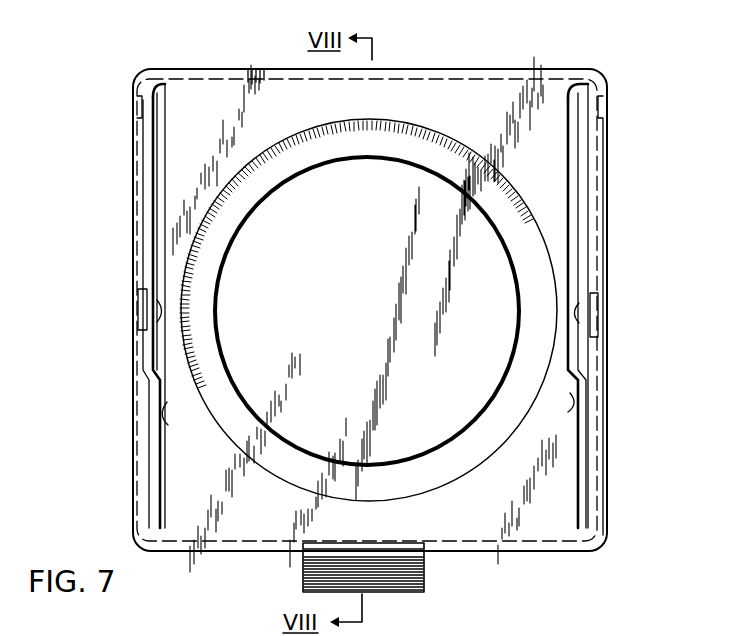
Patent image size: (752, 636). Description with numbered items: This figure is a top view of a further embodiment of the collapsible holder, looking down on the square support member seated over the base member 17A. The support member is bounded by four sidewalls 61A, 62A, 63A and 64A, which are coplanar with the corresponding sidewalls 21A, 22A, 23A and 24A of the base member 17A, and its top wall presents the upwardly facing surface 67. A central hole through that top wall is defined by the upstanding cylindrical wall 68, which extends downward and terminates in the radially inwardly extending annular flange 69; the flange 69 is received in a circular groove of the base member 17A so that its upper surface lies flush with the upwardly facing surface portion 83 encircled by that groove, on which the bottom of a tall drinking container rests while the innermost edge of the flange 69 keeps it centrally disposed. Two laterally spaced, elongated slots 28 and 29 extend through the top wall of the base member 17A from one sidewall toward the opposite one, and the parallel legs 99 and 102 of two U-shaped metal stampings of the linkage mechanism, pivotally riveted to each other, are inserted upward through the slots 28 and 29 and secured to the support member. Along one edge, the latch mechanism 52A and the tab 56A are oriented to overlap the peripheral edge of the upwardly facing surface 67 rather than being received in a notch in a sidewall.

The base member 17A is at (432, 68).
The sidewall 24A is at (503, 71).
The sidewall 64A is at (255, 70).
The upwardly facing surface 67 is at (201, 100).
The sidewall 61A is at (135, 395).
The sidewall 63A is at (607, 390).
The sidewall 21A is at (134, 452).
The sidewall 23A is at (606, 432).
The sidewall 22A is at (224, 549).
The sidewall 62A is at (516, 550).
The legs 99 is at (148, 278).
The legs 102 is at (158, 248).
The slot 29 is at (168, 425).
The slot 28 is at (568, 412).
The cylindrical wall 68 is at (264, 466).
The annular flange 69 is at (306, 472).
The upwardly facing surface portion 83 is at (367, 311).
The tab 56A is at (383, 551).
The latch mechanism 52A is at (432, 573).